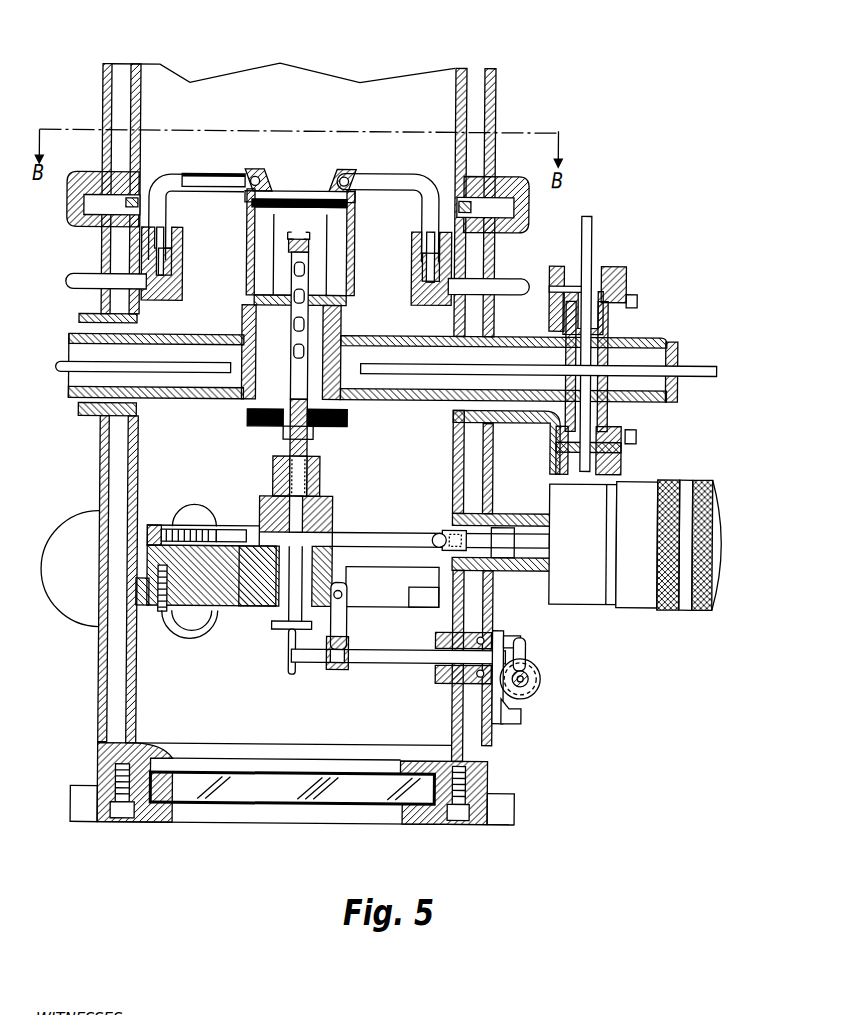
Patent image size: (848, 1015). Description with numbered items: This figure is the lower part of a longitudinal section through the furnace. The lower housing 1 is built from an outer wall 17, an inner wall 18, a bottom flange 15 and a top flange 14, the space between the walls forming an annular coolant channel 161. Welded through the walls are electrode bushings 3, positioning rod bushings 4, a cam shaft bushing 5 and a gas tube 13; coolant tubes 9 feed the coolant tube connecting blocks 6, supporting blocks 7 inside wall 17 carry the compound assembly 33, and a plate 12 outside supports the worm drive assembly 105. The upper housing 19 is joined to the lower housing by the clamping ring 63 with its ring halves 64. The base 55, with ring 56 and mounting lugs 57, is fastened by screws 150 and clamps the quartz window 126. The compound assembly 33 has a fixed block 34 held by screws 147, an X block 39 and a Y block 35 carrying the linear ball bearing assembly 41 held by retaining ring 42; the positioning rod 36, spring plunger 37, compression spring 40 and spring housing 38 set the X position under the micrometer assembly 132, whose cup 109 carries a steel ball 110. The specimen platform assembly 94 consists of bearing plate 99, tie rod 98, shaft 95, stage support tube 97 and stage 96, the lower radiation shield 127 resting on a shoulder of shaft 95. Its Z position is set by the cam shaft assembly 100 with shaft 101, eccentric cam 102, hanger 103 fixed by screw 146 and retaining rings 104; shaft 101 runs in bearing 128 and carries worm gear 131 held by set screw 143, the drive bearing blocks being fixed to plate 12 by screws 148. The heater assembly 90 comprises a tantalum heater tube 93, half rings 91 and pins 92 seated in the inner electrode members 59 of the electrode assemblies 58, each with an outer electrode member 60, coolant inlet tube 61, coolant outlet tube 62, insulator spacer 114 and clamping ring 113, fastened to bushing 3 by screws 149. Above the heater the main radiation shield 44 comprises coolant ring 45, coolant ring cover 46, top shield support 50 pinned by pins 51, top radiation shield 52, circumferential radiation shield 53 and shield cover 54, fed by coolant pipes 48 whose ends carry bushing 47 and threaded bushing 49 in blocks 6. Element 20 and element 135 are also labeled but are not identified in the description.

The lower housing 1 is at (100, 660).
The electrode bushings 3 is at (83, 416).
The positioning rod bushings 4 is at (522, 514).
The cam shaft bushing 5 is at (453, 672).
The coolant tube connecting blocks 6 is at (420, 304).
The supporting blocks 7 is at (190, 614).
The coolant tubes 9 is at (72, 273).
The plate 12 is at (490, 712).
The gas tube 13 is at (68, 527).
The top flange 14 is at (66, 220).
The bottom flange 15 is at (100, 762).
The outer wall 17 is at (100, 691).
The inner wall 18 is at (125, 718).
The upper housing 19 is at (500, 151).
The left wall 20 is at (117, 187).
The compound assembly 33 is at (222, 607).
The fixed block 34 is at (238, 607).
The moveable Y block 35 is at (320, 477).
The positioning rod 36 is at (380, 535).
The spring plunger 37 is at (250, 530).
The spring housing 38 is at (217, 527).
The moveable X block 39 is at (335, 527).
The compression spring 40 is at (155, 527).
The linear ball bearing assembly 41 is at (283, 472).
The retaining ring 42 is at (328, 462).
The main radiation shield 44 is at (357, 173).
The coolant ring 45 is at (268, 177).
The coolant ring cover 46 is at (336, 174).
The bushing 47 is at (413, 262).
The coolant pipes 48 is at (403, 176).
The bushing 49 is at (417, 228).
The top shield support 50 is at (247, 207).
The pins 51 is at (417, 228).
The top radiation shield 52 is at (299, 196).
The circumferential radiation shield 53 is at (253, 250).
The circumferential shield cover 54 is at (353, 321).
The base 55 is at (432, 824).
The ring 56 is at (487, 828).
The mounting lugs 57 is at (85, 824).
The electrode assemblies 58 is at (677, 350).
The inner electrode member 59 is at (405, 399).
The outer electrode member 60 is at (677, 390).
The coolant inlet tube 61 is at (707, 368).
The coolant outlet tube 62 is at (593, 221).
The clamping ring 63 is at (545, 203).
The ring halves 64 is at (66, 196).
The heater assembly 90 is at (250, 287).
The tantalum half rings 91 is at (352, 296).
The tantalum pins 92 is at (332, 400).
The heater tube 93 is at (270, 264).
The specimen platform assembly 94 is at (290, 441).
The shaft 95 is at (307, 440).
The stage 96 is at (310, 250).
The stage support tube 97 is at (290, 286).
The tie rod 98 is at (290, 617).
The bearing plate 99 is at (285, 643).
The cam shaft assembly 100 is at (372, 665).
The shaft 101 is at (383, 663).
The cam 102 is at (293, 672).
The hanger 103 is at (350, 627).
The retaining rings 104 is at (332, 667).
The worm drive assembly 105 is at (543, 677).
The cup 109 is at (447, 530).
The steel ball 110 is at (440, 533).
The clamping ring 113 is at (627, 290).
The insulator spacer 114 is at (607, 320).
The quartz window 126 is at (233, 804).
The lower radiation shield 127 is at (250, 410).
The bearing 128 is at (442, 670).
The worm gear 131 is at (528, 650).
The micrometer assembly 132 is at (688, 487).
The bracket 135 is at (493, 717).
The set screw 143 is at (508, 657).
The screw 146 is at (339, 599).
The screws 147 is at (160, 613).
The screws 148 is at (518, 635).
The screws 149 is at (638, 432).
The screws 150 is at (128, 824).
The annular coolant channel 161 is at (483, 486).